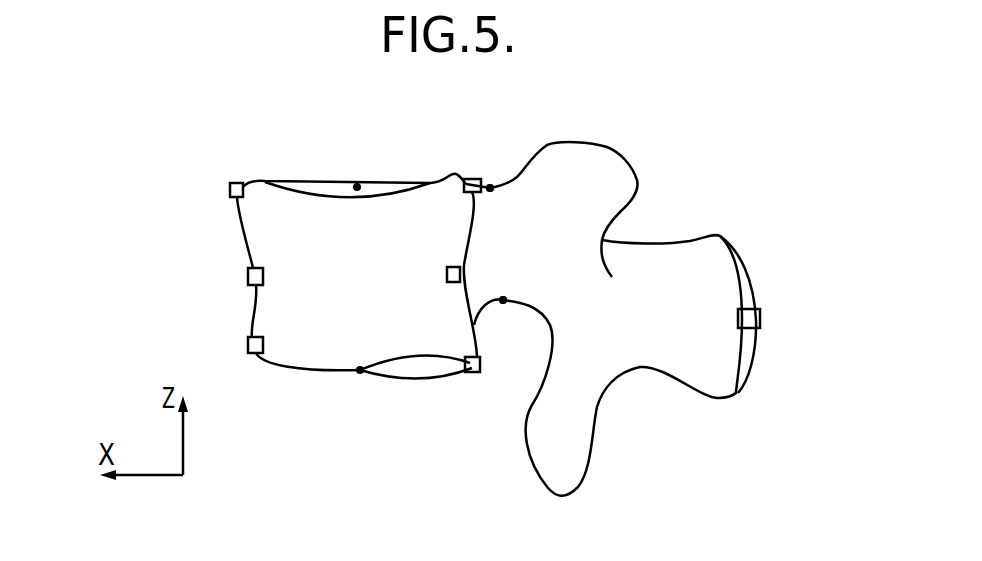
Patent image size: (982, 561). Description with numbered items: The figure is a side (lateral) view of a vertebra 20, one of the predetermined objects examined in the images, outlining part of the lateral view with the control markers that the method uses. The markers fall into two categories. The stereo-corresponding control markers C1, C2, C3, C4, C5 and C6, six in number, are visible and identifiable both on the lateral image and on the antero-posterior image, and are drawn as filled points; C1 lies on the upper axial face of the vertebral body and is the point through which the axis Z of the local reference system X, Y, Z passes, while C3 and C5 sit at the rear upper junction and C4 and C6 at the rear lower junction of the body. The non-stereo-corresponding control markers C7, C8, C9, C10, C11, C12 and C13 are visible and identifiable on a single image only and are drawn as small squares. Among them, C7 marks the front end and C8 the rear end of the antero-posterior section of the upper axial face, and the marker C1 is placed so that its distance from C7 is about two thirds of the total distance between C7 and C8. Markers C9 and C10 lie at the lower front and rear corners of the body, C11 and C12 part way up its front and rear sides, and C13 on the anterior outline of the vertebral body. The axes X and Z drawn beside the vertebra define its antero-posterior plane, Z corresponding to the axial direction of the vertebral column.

The marker C1 is at (355, 186).
The stereo-corresponding control marker C2 is at (360, 370).
The stereo-corresponding control marker C3 is at (490, 188).
The stereo-corresponding control marker C4 is at (503, 300).
The stereo-corresponding control marker C5 is at (490, 188).
The stereo-corresponding control marker C6 is at (503, 300).
The front end C7 is at (230, 188).
The rear end C8 is at (477, 183).
The non-stereo-corresponding control marker C9 is at (258, 353).
The non-stereo-corresponding control marker C10 is at (478, 373).
The non-stereo-corresponding control marker C11 is at (248, 276).
The non-stereo-corresponding control marker C12 is at (450, 282).
The non-stereo-corresponding control marker C13 is at (760, 318).
The vertebra 20 is at (694, 218).